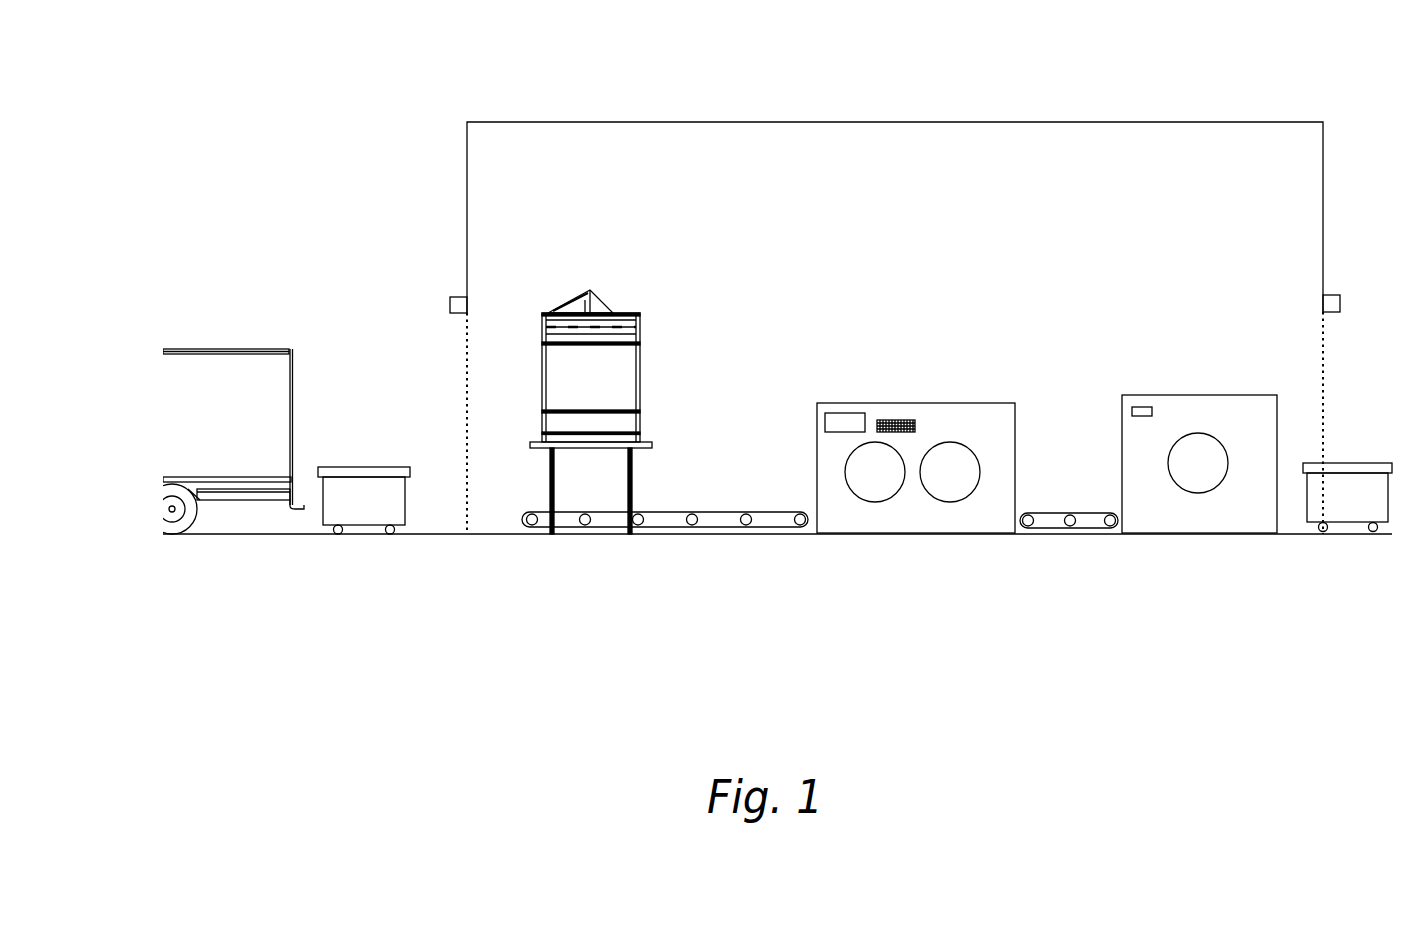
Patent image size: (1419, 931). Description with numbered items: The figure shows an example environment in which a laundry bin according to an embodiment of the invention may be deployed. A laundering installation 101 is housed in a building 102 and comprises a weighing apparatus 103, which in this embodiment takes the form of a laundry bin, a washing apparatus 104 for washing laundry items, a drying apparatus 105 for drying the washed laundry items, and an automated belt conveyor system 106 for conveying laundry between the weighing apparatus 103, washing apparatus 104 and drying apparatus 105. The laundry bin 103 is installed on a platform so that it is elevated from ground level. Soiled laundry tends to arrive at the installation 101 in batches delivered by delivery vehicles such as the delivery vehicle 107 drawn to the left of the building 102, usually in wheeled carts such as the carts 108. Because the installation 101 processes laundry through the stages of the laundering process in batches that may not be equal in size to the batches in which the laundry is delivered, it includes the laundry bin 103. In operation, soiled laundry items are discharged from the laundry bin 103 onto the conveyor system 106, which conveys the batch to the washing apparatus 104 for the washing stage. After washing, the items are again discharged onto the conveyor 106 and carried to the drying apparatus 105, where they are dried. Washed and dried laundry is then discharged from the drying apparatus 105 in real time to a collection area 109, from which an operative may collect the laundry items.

The laundering installation 101 is at (1164, 222).
The building 102 is at (1150, 122).
The weighing apparatus 103 is at (633, 313).
The washing apparatus 104 is at (940, 403).
The drying apparatus 105 is at (1182, 395).
The automated belt conveyor system 106 is at (1018, 550).
The delivery vehicle 107 is at (267, 348).
The carts 108 is at (350, 467).
The collection area 109 is at (1345, 569).